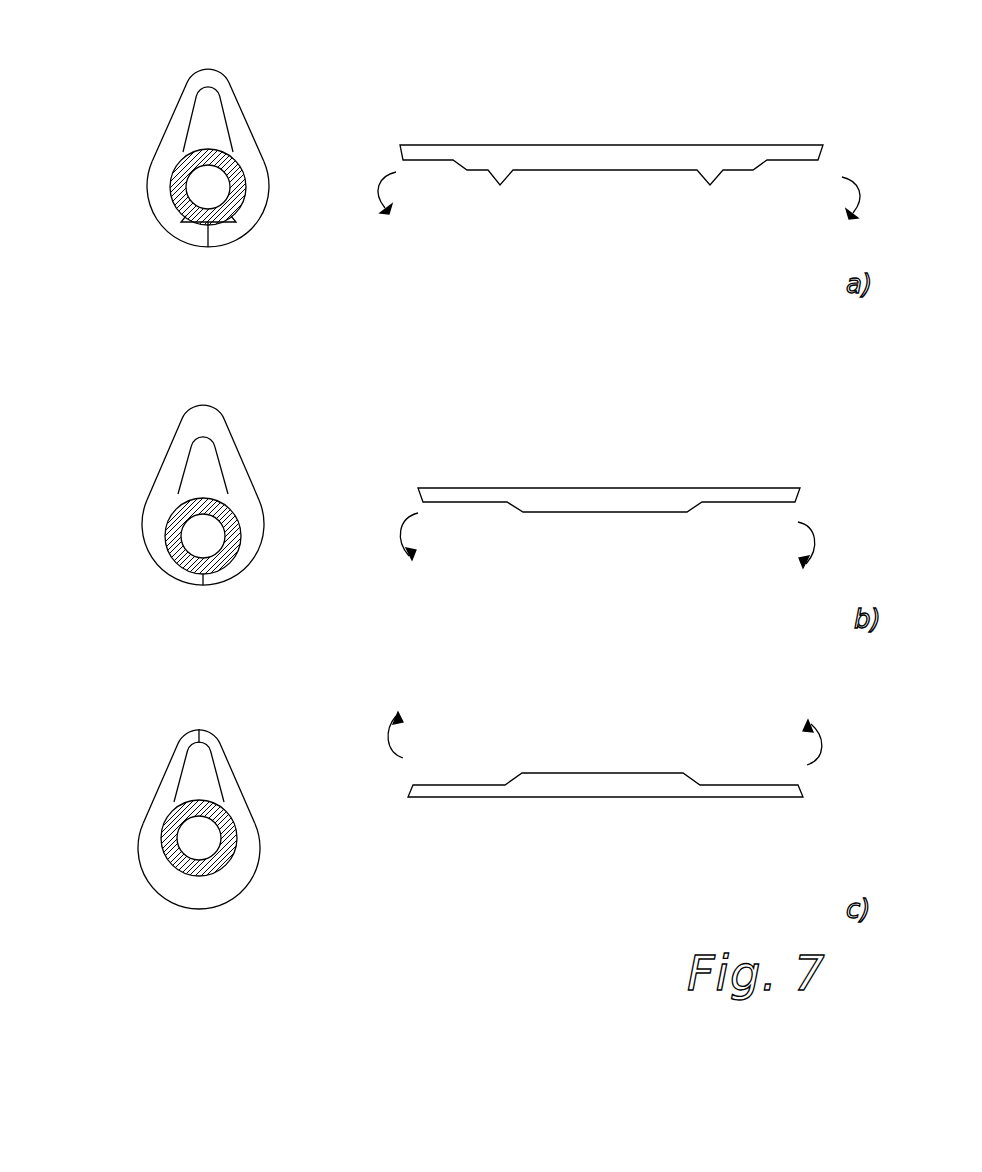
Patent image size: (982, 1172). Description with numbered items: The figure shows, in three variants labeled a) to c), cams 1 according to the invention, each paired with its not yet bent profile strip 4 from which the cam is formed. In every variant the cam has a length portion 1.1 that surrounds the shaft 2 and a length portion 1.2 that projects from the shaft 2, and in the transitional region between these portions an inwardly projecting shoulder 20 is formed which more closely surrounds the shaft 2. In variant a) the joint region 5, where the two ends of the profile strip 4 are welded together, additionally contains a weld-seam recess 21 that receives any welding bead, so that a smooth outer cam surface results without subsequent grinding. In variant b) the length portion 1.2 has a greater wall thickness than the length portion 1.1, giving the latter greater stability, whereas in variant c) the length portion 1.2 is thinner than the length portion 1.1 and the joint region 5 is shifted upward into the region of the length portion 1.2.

The cam 1 is at (174, 55).
The length portion 1.1 is at (263, 202).
The length portion 1.2 is at (227, 90).
The shaft 2 is at (172, 200).
The profile strip 4 is at (655, 155).
The joint region 5 is at (200, 243).
The shoulder 20 is at (237, 153).
The weld-seam recess 21 is at (218, 227).